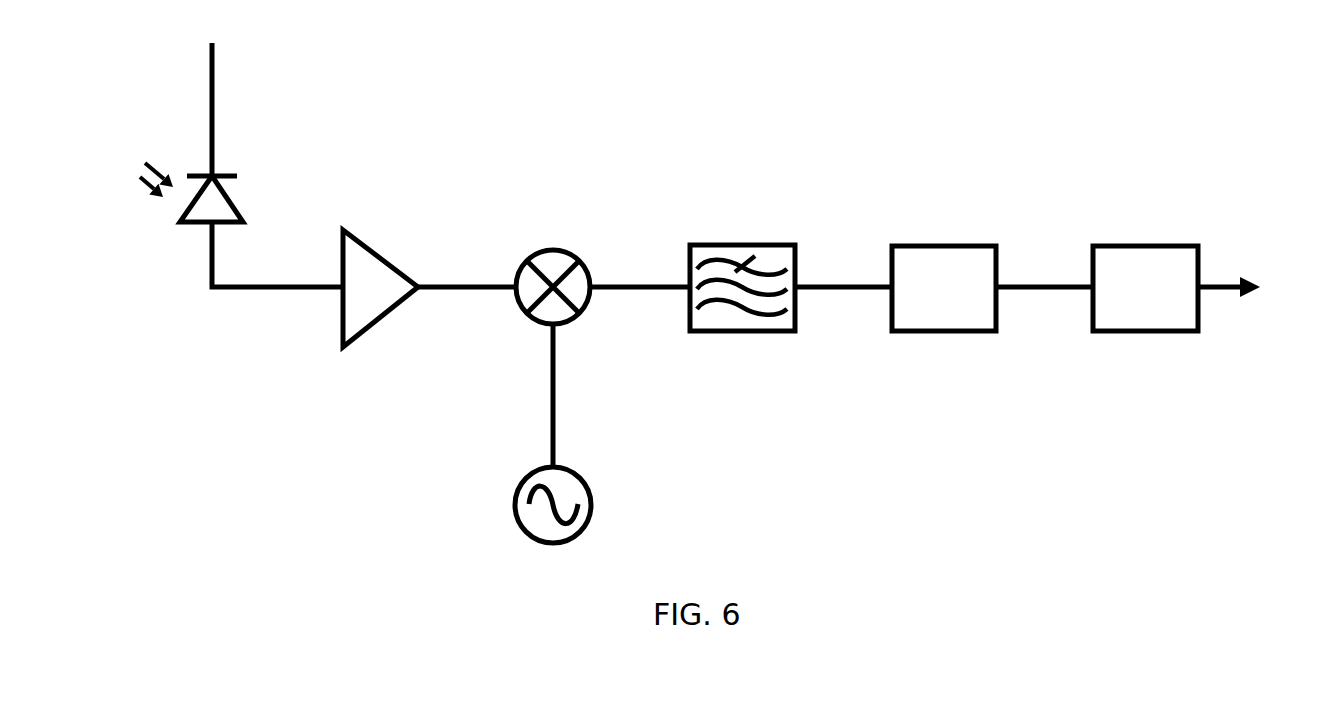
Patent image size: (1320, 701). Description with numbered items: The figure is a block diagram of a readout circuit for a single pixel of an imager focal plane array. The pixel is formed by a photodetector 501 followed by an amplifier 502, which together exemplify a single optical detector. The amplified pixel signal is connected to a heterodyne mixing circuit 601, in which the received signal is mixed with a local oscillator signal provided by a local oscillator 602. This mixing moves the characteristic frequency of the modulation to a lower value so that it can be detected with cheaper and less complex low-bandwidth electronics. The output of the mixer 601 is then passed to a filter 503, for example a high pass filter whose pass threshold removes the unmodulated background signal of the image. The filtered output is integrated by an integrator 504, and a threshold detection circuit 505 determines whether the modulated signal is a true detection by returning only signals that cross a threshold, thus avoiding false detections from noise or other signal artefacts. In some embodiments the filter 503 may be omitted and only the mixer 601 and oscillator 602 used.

The photodetector 501 is at (192, 157).
The amplifier 502 is at (343, 230).
The heterodyne mixing circuit 601 is at (530, 245).
The local oscillator 602 is at (523, 478).
The filter 503 is at (742, 237).
The integrator 504 is at (960, 242).
The threshold detection circuit 505 is at (1140, 240).